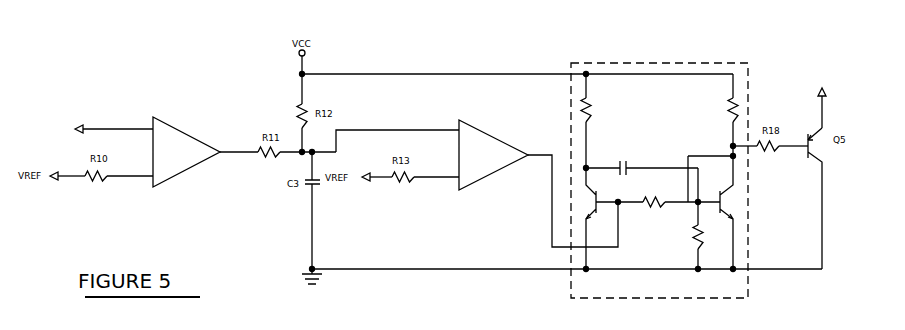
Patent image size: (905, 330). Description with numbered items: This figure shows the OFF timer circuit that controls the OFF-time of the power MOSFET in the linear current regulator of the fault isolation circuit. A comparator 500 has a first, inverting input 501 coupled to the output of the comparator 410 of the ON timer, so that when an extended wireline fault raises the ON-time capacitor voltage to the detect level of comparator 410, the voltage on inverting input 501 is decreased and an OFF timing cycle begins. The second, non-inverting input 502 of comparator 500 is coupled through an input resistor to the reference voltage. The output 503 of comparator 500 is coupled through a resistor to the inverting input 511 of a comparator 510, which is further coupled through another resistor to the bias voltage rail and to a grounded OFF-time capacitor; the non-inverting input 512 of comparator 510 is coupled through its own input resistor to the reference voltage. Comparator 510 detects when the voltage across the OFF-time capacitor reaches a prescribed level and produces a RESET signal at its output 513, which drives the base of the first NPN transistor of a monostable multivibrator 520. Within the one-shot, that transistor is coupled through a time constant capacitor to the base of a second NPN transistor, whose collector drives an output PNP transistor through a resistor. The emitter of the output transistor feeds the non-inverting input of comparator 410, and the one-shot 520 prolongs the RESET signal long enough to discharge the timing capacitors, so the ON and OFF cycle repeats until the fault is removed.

The comparator 410 is at (443, 96).
The comparator 500 is at (187, 129).
The inverting input 501 is at (140, 127).
The non-inverting input 502 is at (150, 177).
The output 503 is at (226, 150).
The comparator 510 is at (496, 137).
The inverting input 511 is at (448, 122).
The non-inverting input 512 is at (449, 180).
The output 513 is at (533, 152).
The monostable multivibrator 520 is at (633, 63).